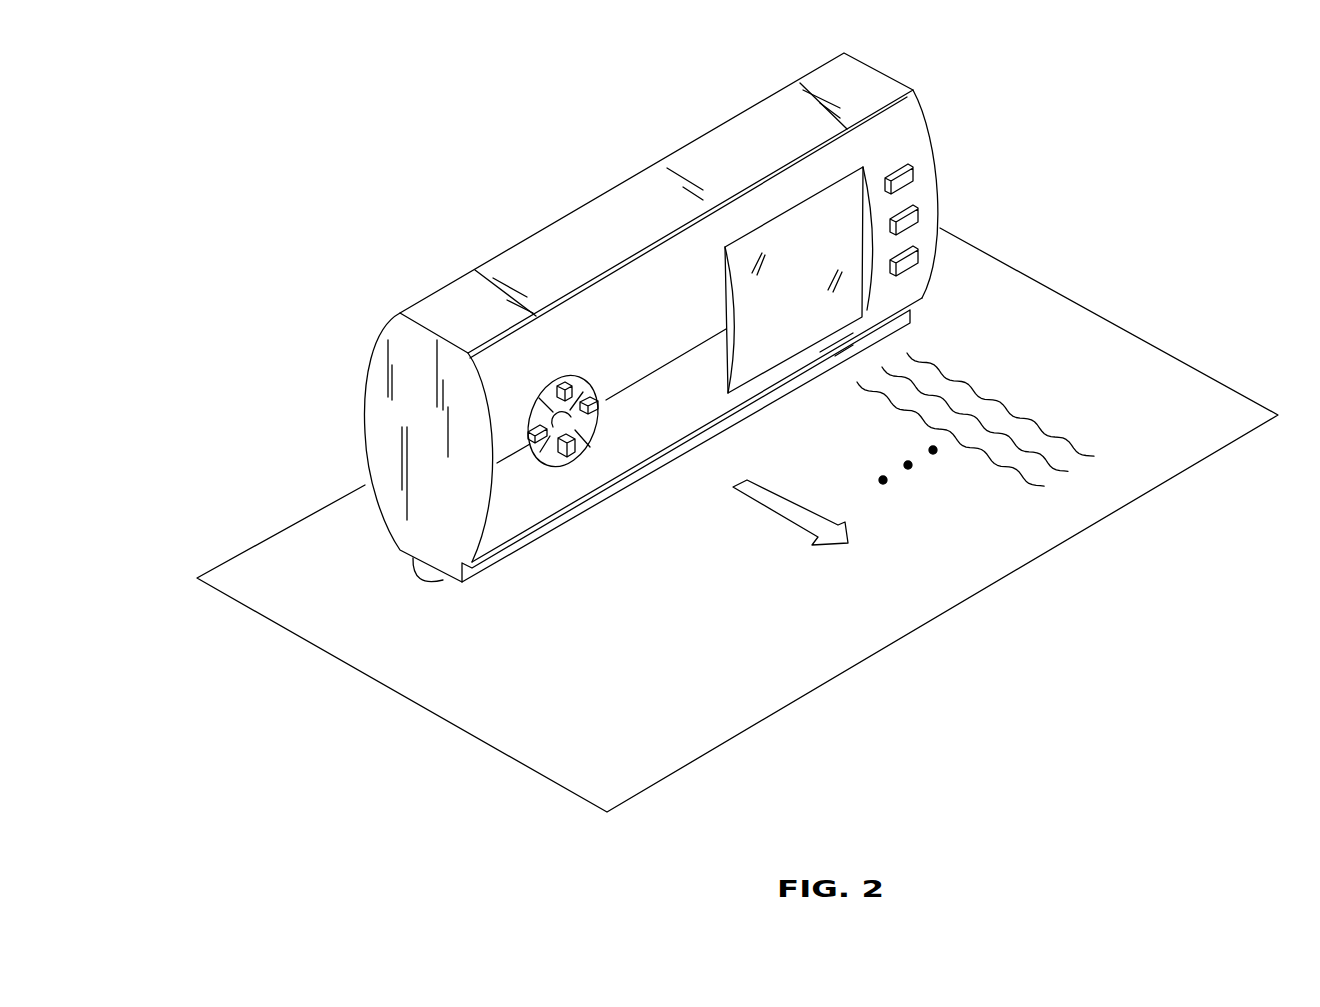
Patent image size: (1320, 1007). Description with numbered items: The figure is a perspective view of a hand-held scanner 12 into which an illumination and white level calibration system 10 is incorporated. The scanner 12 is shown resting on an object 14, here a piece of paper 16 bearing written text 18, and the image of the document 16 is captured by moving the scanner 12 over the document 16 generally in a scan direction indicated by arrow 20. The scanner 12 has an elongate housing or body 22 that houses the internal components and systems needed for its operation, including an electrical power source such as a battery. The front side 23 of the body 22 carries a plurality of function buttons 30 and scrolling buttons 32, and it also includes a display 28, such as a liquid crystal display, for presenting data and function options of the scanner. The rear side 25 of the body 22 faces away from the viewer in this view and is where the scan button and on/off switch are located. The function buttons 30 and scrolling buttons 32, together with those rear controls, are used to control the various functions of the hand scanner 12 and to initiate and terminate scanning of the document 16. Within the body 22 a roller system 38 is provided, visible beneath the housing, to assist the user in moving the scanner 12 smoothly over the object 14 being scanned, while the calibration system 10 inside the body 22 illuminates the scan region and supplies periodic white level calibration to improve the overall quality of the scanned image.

The illumination and white level calibration system 10 is at (310, 212).
The hand-held scanner 12 is at (648, 322).
The object 14 is at (287, 518).
The piece of paper 16 is at (1108, 318).
The written text 18 is at (1033, 418).
The arrow 20 is at (773, 512).
The elongate housing or body 22 is at (570, 213).
The front side 23 is at (493, 507).
The rear side 25 is at (365, 407).
The display 28 is at (798, 355).
The function buttons 30 is at (914, 252).
The scrolling buttons 32 is at (582, 368).
The roller system 38 is at (420, 577).